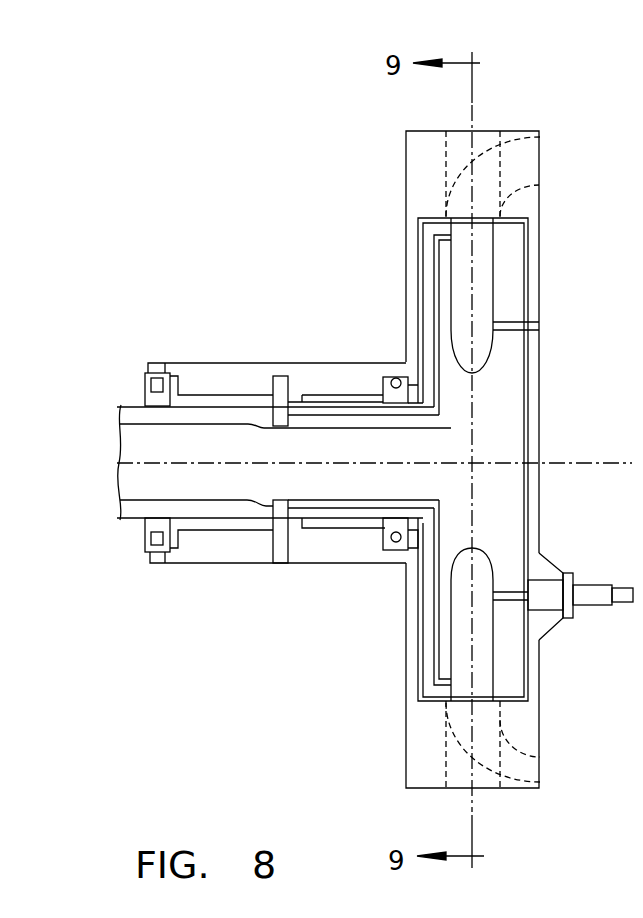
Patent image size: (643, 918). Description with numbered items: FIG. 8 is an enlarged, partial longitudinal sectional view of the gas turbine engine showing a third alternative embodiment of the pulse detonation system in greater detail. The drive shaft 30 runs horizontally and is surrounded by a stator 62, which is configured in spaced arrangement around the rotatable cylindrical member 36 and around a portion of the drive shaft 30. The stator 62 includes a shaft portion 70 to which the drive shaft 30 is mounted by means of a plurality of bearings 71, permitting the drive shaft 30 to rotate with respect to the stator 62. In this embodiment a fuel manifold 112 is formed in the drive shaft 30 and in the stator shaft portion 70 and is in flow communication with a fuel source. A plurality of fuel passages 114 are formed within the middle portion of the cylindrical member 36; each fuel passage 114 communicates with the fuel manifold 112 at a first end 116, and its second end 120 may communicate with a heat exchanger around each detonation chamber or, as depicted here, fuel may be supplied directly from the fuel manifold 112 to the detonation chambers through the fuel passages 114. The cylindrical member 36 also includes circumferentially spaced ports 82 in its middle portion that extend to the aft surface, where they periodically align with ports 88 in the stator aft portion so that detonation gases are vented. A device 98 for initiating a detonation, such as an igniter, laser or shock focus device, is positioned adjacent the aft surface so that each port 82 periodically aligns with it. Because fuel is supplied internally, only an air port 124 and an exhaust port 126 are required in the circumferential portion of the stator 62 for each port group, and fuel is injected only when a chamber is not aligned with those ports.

The drive shaft 30 is at (133, 406).
The rotatable cylindrical member 36 is at (546, 372).
The stator 62 is at (516, 128).
The shaft portion 70 is at (222, 372).
The bearings 71 is at (160, 377).
The ports 82 is at (508, 328).
The ports 88 is at (539, 326).
The device for initiating a detonation 98 is at (590, 588).
The fuel manifold 112 is at (275, 421).
The fuel passages 114 is at (437, 295).
The first end 116 is at (273, 500).
The second end 120 is at (455, 684).
The air port 124 is at (460, 790).
The exhaust port 126 is at (540, 757).